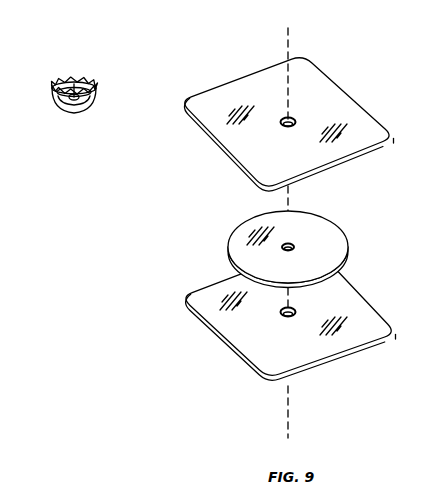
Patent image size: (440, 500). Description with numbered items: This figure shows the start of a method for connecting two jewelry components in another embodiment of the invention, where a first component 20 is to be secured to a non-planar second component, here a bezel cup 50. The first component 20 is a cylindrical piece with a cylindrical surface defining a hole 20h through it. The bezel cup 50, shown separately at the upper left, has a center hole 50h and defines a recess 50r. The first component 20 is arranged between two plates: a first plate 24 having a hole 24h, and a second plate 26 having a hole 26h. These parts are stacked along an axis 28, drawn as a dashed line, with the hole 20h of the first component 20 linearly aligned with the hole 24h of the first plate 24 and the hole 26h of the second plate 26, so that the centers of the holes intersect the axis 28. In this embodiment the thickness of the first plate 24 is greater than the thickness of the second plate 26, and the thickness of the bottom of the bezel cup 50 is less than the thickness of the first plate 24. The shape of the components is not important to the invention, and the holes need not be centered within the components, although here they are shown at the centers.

The first component 20 is at (330, 227).
The hole 20h is at (285, 251).
The first plate 24 is at (337, 88).
The hole 24h is at (281, 125).
The second plate 26 is at (358, 301).
The hole 26h is at (283, 320).
The axis 28 is at (286, 44).
The bezel cup 50 is at (94, 107).
The center hole 50h is at (72, 84).
The recess 50r is at (92, 86).